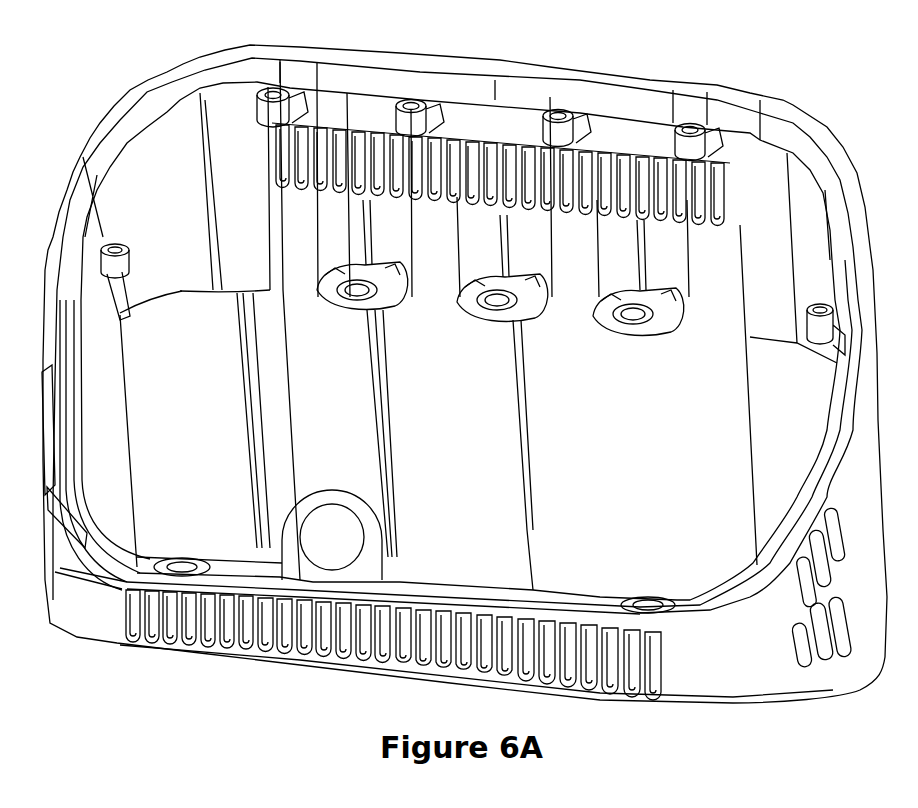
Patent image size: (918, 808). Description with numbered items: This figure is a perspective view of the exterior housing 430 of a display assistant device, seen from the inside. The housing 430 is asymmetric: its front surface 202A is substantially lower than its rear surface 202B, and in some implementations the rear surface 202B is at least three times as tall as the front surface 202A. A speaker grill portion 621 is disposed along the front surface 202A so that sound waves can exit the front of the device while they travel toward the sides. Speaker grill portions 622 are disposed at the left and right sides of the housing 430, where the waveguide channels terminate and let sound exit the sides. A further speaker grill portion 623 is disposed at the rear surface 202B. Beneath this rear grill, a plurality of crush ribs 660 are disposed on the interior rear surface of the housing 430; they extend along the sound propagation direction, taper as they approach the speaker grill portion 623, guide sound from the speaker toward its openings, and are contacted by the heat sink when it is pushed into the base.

The exterior housing 430 is at (122, 60).
The speaker grill portion 623 is at (617, 165).
The crush ribs 660 is at (367, 243).
The rear surface 202B is at (478, 326).
The front surface 202A is at (396, 622).
The speaker grill portion 621 is at (288, 652).
The speaker grill portions 622 is at (47, 573).